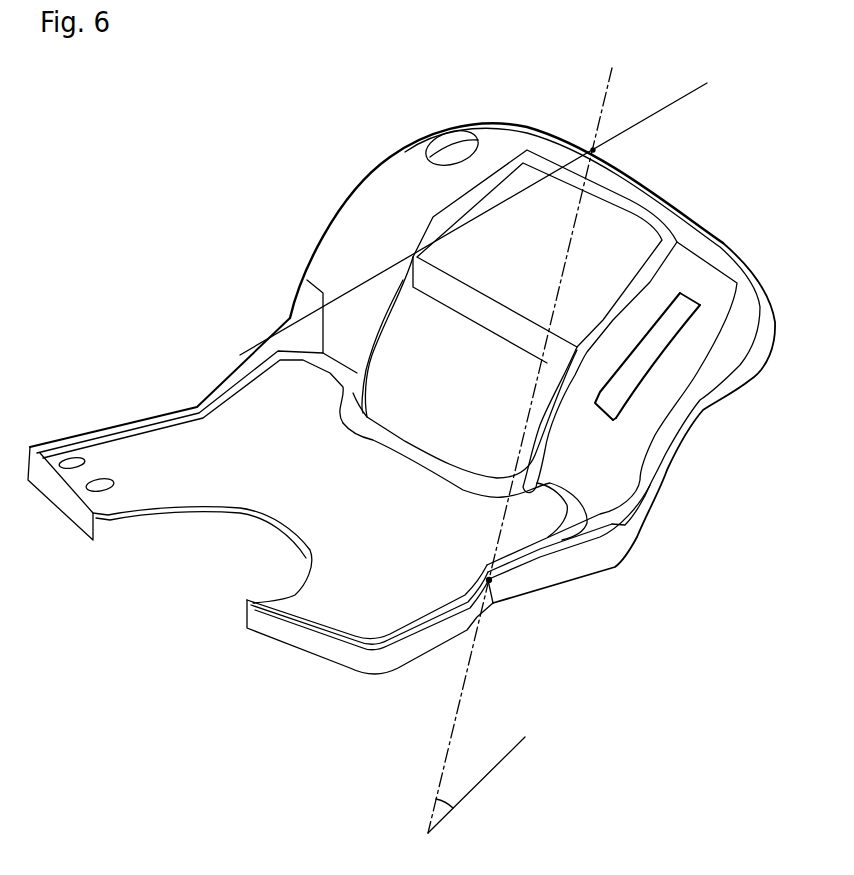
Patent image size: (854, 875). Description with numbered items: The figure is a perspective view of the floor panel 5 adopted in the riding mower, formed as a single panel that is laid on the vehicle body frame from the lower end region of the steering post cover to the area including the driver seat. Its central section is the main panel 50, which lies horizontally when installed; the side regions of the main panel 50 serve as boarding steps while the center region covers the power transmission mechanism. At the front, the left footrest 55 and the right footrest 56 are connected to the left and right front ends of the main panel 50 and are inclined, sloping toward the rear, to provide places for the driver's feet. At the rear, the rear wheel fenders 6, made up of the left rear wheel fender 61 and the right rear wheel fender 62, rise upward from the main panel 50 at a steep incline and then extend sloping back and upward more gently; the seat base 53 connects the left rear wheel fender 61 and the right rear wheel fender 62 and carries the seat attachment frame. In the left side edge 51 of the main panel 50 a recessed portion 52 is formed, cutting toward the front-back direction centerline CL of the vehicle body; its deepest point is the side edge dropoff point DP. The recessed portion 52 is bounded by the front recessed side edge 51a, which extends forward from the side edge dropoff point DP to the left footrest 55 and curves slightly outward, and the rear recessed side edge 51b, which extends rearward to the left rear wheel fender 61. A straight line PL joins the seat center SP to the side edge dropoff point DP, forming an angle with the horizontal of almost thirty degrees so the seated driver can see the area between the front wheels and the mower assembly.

The floor panel 5 is at (394, 404).
The rear wheel fenders 6 is at (360, 160).
The main panel 50 is at (343, 510).
The side edge 51 is at (78, 512).
The front recessed side edge 51a is at (150, 413).
The rear recessed side edge 51b is at (227, 383).
The recessed portion 52 is at (188, 400).
The seat base 53 is at (617, 237).
The left footrest 55 is at (340, 607).
The right footrest 56 is at (133, 482).
The left rear wheel fender 61 is at (683, 347).
The right rear wheel fender 62 is at (395, 170).
The front-back direction centerline CL is at (665, 107).
The seat center SP is at (593, 150).
The straight line PL is at (497, 527).
The side edge dropoff point DP is at (497, 582).